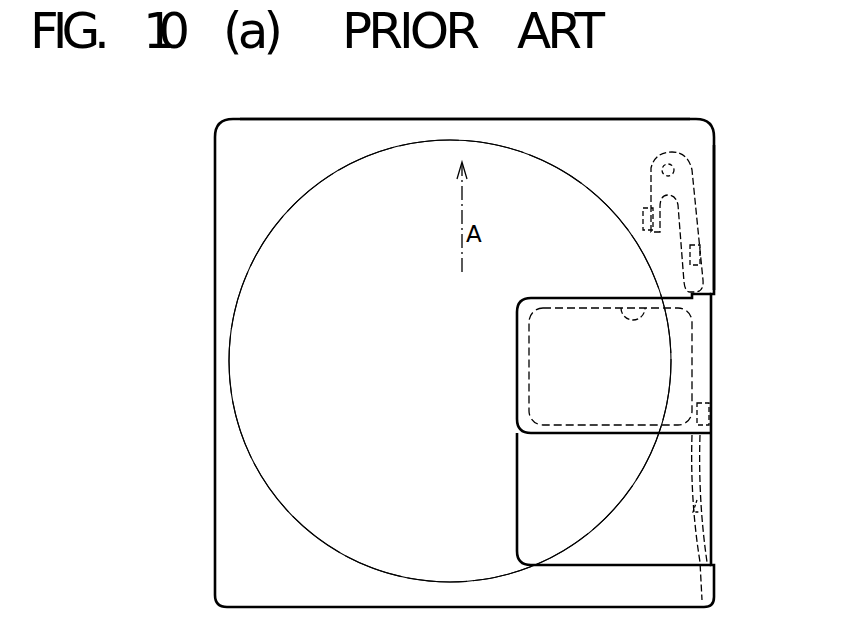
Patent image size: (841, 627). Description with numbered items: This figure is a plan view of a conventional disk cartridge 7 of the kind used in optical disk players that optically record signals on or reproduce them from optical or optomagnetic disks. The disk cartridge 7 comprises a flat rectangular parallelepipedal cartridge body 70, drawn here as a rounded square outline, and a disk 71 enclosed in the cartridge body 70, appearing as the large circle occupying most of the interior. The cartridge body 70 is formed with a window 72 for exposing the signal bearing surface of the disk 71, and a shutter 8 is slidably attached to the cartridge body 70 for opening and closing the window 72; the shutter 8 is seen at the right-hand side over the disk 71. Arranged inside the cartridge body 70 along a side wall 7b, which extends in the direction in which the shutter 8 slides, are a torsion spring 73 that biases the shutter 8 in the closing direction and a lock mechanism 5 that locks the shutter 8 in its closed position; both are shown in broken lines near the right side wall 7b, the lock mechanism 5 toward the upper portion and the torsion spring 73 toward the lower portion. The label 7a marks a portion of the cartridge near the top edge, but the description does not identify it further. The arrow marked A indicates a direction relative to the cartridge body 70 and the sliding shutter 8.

The disk cartridge 7 is at (512, 119).
The upper case half 7a is at (573, 119).
The side wall 7b is at (717, 232).
The cartridge body 70 is at (379, 126).
The disk 71 is at (342, 168).
The window 72 is at (620, 308).
The torsion spring 73 is at (704, 549).
The lock mechanism 5 is at (708, 208).
The shutter 8 is at (706, 350).